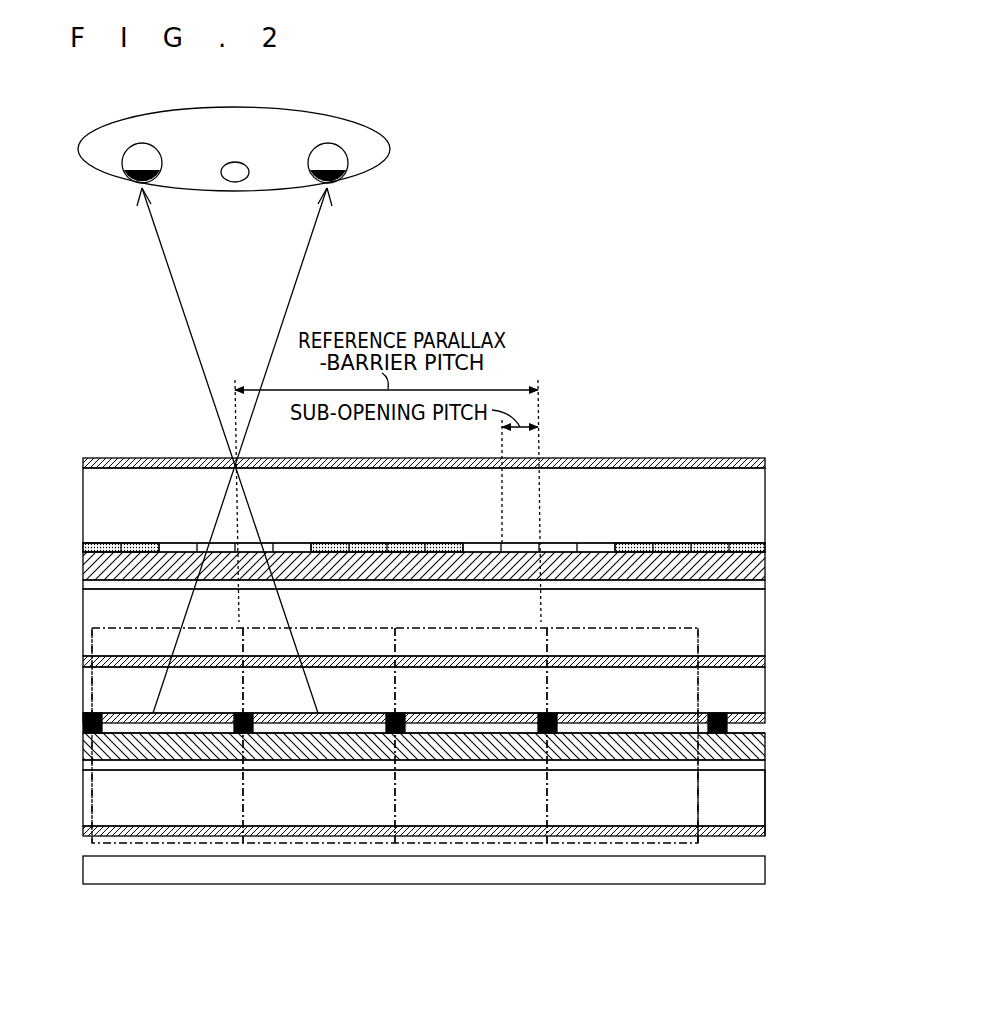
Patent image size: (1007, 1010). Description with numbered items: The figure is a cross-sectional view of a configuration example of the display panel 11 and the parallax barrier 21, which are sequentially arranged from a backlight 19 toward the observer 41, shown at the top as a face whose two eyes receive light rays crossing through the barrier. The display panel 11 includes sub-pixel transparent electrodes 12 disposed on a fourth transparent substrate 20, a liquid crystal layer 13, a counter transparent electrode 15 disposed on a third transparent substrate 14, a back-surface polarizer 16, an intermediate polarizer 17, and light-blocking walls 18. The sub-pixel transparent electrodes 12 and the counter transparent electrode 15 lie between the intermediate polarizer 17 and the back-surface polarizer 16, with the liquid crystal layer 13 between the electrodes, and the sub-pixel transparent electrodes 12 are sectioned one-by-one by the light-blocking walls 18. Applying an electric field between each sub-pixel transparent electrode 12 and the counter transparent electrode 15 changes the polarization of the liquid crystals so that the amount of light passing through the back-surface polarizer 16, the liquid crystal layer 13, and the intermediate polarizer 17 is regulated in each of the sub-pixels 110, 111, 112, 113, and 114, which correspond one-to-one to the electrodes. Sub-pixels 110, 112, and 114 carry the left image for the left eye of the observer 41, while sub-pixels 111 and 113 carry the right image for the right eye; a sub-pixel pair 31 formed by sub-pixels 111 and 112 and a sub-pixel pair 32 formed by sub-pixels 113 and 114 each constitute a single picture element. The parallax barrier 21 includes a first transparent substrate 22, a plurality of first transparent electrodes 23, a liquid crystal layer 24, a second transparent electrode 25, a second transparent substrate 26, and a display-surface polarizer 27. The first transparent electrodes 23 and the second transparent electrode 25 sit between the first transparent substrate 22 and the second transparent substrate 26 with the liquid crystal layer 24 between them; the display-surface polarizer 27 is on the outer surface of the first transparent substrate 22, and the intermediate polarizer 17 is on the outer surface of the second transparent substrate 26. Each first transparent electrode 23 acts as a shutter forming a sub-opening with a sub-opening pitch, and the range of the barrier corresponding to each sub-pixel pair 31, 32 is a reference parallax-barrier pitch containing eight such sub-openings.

The observer 41 is at (240, 107).
The parallax barrier 21 is at (478, 540).
The display-surface polarizer 27 is at (700, 458).
The first transparent substrate 22 is at (753, 512).
The first transparent electrodes 23 is at (757, 548).
The liquid crystal layer 24 is at (757, 565).
The second transparent electrode 25 is at (757, 585).
The second transparent substrate 26 is at (448, 622).
The display panel 11 is at (453, 778).
The intermediate polarizer 17 is at (757, 662).
The third transparent substrate 14 is at (755, 697).
The sub-pixel transparent electrodes 12 is at (757, 717).
The light-blocking walls 18 is at (83, 725).
The liquid crystal layer 13 is at (757, 740).
The counter transparent electrode 15 is at (755, 765).
The fourth transparent substrate 20 is at (755, 797).
The back-surface polarizer 16 is at (757, 830).
The backlight 19 is at (448, 870).
The sub-pixel 110 is at (150, 805).
The sub-pixel 111 is at (318, 805).
The sub-pixel 112 is at (469, 781).
The sub-pixel 113 is at (622, 805).
The sub-pixel 114 is at (730, 852).
The sub-pixel pair 31 is at (395, 810).
The sub-pixel pair 32 is at (656, 810).